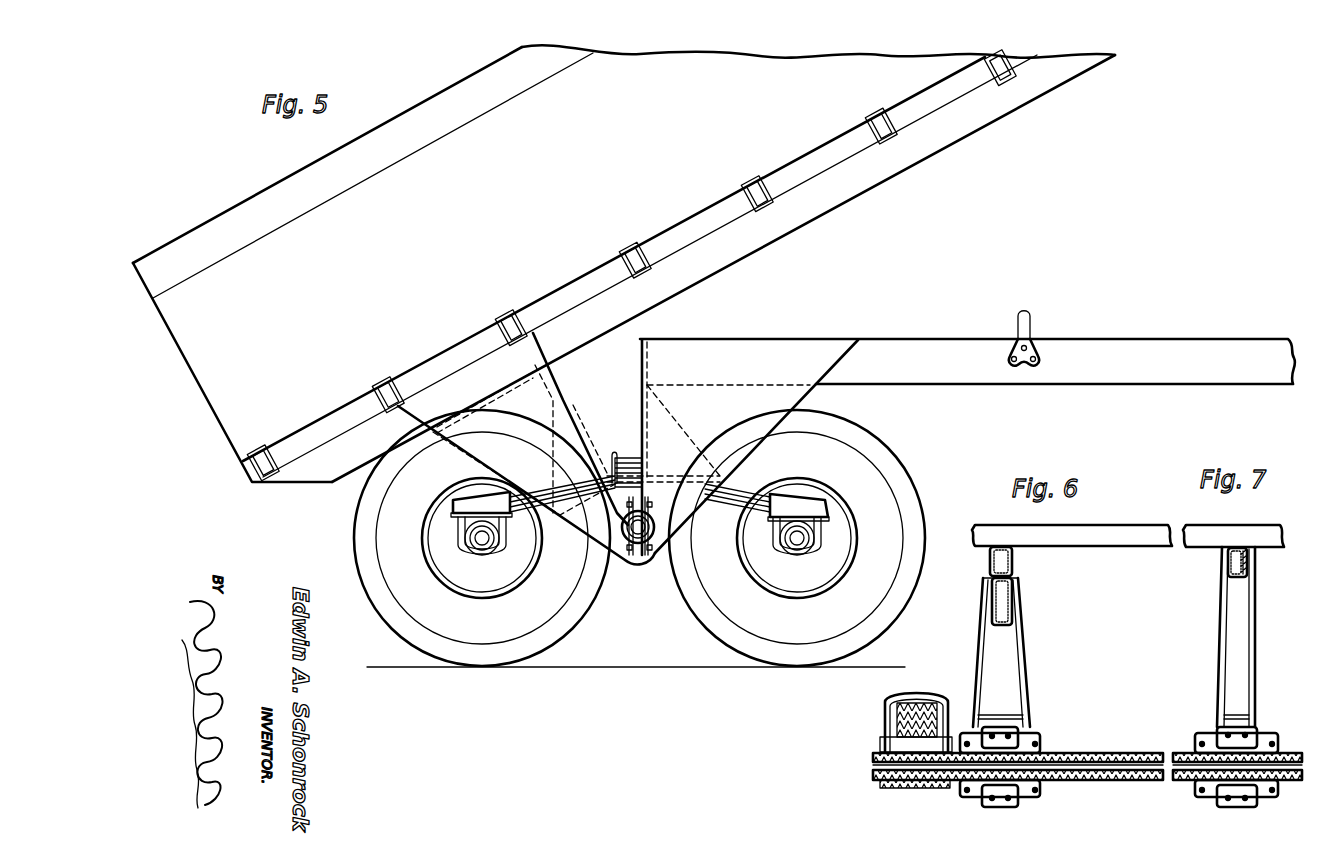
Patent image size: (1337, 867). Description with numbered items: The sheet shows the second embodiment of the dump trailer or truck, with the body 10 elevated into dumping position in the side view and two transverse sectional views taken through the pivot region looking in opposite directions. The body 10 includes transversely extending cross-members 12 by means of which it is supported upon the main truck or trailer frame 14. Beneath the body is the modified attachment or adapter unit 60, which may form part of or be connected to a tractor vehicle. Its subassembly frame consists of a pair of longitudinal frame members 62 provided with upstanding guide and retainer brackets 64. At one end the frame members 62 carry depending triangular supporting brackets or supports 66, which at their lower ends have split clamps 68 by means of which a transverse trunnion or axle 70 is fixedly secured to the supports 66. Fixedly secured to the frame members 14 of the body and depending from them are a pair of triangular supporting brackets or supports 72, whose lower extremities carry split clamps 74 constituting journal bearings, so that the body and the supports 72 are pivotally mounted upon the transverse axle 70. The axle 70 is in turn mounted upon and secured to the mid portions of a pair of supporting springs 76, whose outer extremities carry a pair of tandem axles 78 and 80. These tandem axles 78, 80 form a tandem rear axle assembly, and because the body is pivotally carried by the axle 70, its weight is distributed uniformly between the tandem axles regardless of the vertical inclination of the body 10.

In FIG. 5, the body 10 is at (624, 263).
In FIG. 5, the cross-members 12 is at (504, 316).
In FIG. 6, the cross-members 12 is at (1138, 540).
In FIG. 7, the cross-members 12 is at (1232, 532).
In FIG. 5, the main truck or trailer frame 14 is at (782, 230).
In FIG. 6, the main truck or trailer frame 14 is at (990, 566).
In FIG. 7, the main truck or trailer frame 14 is at (1225, 568).
In FIG. 5, the attachment or adapter unit 60 is at (906, 322).
In FIG. 5, the longitudinal frame members 62 is at (1142, 377).
In FIG. 6, the longitudinal frame members 62 is at (992, 613).
In FIG. 5, the guide and retainer brackets 64 is at (1028, 313).
In FIG. 5, the triangular supporting brackets 66 is at (762, 350).
In FIG. 6, the triangular supporting brackets 66 is at (1023, 667).
In FIG. 5, the split clamps 68 is at (653, 518).
In FIG. 6, the split clamps 68 is at (997, 727).
In FIG. 7, the split clamps 68 is at (1220, 735).
In FIG. 5, the transverse trunnion or axle 70 is at (623, 532).
In FIG. 6, the transverse trunnion or axle 70 is at (1018, 766).
In FIG. 7, the transverse trunnion or axle 70 is at (1187, 780).
In FIG. 5, the triangular supporting brackets 72 is at (545, 399).
In FIG. 7, the triangular supporting brackets 72 is at (1250, 642).
In FIG. 5, the split clamps 74 is at (622, 523).
In FIG. 6, the split clamps 74 is at (1043, 743).
In FIG. 7, the split clamps 74 is at (1195, 745).
In FIG. 5, the supporting springs 76 is at (740, 503).
In FIG. 6, the supporting springs 76 is at (895, 723).
In FIG. 5, the tandem axle 78 is at (482, 548).
In FIG. 5, the tandem axle 80 is at (797, 548).